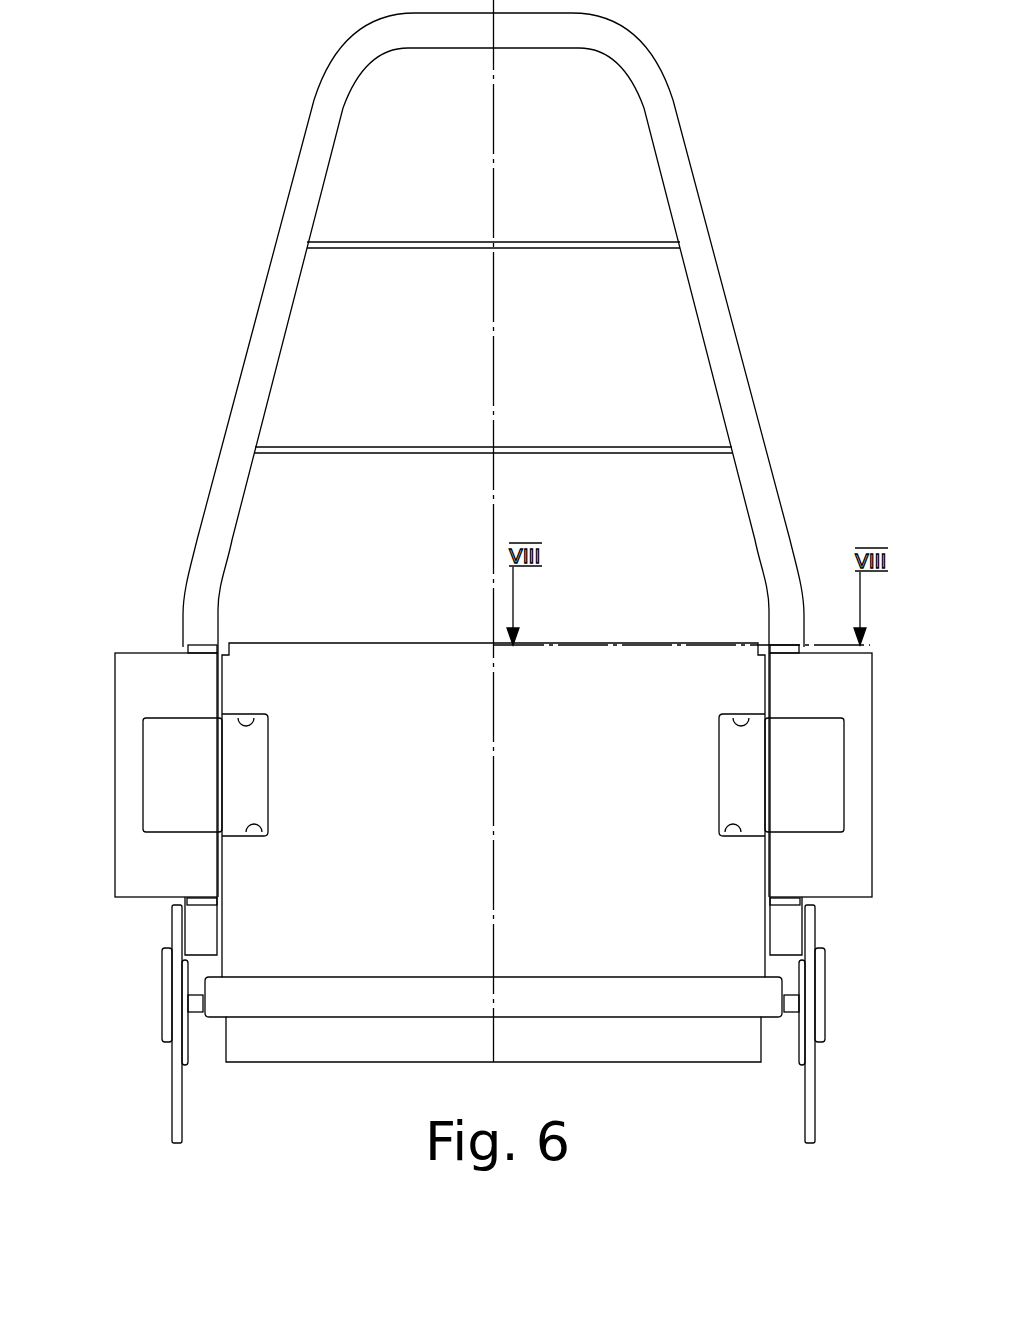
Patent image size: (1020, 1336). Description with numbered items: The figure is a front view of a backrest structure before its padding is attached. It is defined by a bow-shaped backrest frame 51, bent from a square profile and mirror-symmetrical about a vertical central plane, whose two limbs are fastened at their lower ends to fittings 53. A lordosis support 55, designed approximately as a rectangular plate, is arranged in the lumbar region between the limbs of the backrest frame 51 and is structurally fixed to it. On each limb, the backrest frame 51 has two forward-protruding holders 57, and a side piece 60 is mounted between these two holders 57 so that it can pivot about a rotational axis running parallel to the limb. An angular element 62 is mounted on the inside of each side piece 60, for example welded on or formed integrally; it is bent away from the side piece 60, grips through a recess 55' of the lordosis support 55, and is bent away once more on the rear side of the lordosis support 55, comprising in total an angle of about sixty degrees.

The backrest frame 51 is at (712, 322).
The fitting 53 is at (173, 1018).
The lordosis support 55 is at (493, 824).
The recess 55' is at (493, 787).
The holder 57 is at (204, 645).
The side piece 60 is at (150, 697).
The angular element 62 is at (178, 772).